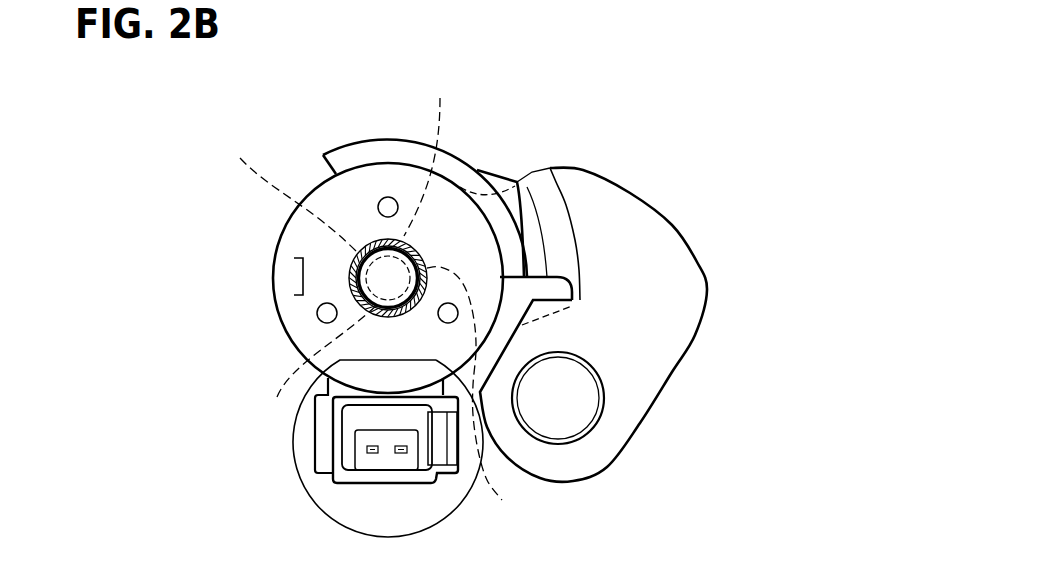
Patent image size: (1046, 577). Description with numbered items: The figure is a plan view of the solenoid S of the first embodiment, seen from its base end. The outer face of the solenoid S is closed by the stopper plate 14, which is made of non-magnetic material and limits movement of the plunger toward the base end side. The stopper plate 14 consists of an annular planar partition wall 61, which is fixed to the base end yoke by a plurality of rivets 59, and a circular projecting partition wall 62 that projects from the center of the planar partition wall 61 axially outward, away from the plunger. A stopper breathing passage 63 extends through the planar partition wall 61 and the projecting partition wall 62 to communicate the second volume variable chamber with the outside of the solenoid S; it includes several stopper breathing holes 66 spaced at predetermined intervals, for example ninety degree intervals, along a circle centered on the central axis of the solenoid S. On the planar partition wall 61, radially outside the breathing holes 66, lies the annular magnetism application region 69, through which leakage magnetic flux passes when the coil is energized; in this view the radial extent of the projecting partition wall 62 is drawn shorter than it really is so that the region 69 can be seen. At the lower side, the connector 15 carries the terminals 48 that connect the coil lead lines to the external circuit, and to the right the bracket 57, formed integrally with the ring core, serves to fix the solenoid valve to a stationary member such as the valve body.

The solenoid S is at (295, 140).
The stopper plate 14 is at (468, 188).
The planar partition wall 61 is at (477, 171).
The connector 15 is at (315, 440).
The terminals 48 is at (401, 453).
The bracket 57 is at (698, 253).
The rivets 59 is at (385, 198).
The projecting partition wall 62 is at (382, 285).
The stopper breathing passage 63 is at (452, 154).
The stopper breathing holes 66 is at (397, 300).
The magnetism application region 69 is at (294, 270).